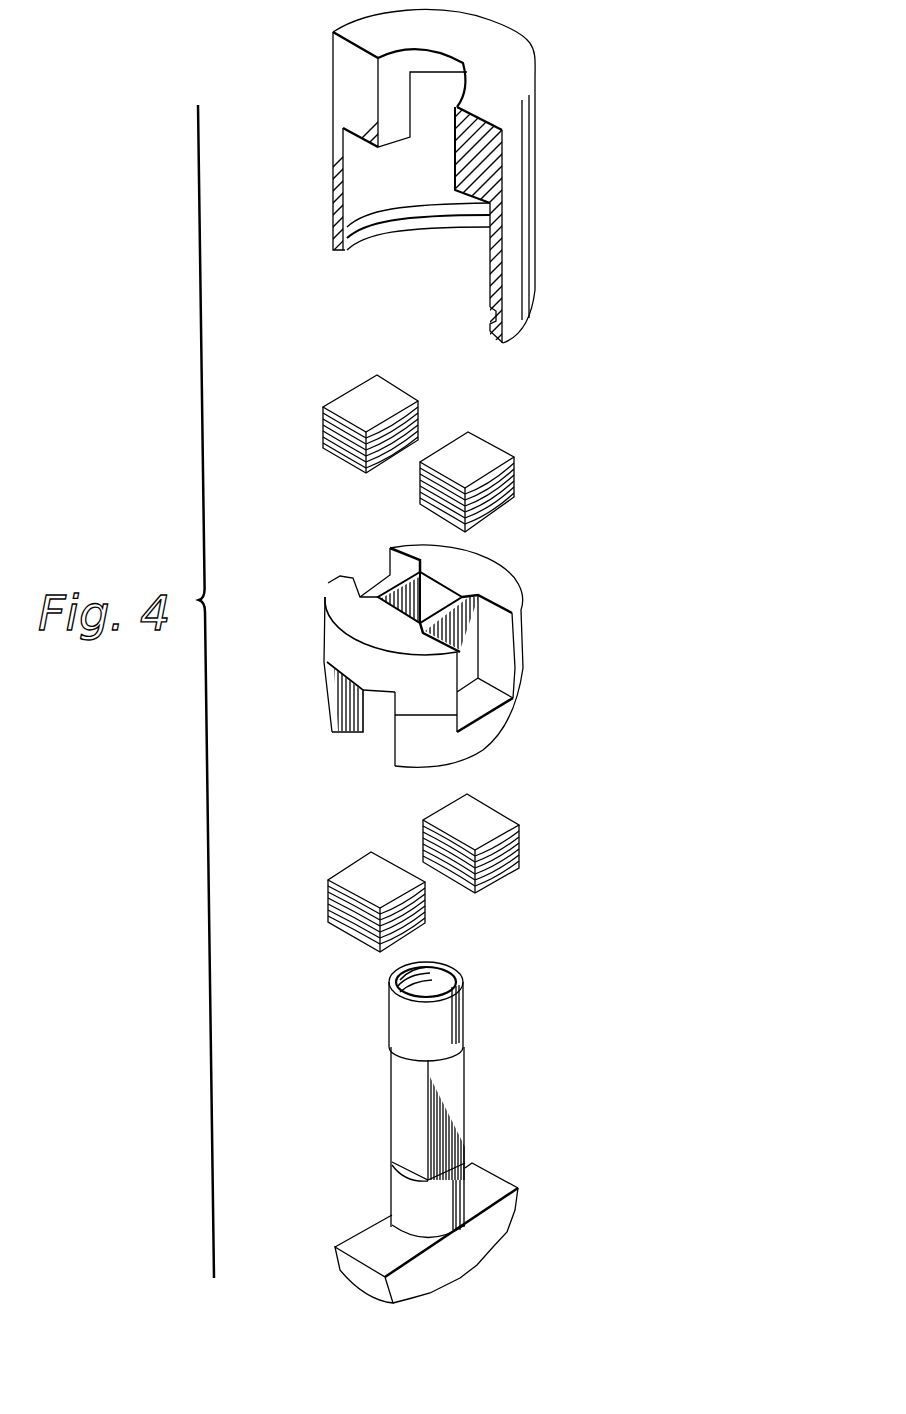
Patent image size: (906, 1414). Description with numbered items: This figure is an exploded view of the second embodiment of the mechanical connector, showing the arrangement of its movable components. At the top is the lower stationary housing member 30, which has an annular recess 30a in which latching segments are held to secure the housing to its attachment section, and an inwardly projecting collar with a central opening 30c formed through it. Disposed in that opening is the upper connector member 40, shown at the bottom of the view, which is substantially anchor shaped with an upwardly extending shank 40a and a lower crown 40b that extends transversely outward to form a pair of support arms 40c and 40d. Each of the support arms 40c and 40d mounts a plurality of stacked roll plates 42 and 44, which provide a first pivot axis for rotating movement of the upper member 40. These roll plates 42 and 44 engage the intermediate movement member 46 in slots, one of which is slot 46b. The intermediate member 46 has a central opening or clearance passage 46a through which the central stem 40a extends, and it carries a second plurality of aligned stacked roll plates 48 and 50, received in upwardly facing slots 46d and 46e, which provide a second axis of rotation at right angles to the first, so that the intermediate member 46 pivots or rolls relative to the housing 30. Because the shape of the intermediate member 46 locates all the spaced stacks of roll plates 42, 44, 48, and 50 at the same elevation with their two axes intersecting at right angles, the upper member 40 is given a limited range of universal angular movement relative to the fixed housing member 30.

The lower stationary housing member 30 is at (450, 426).
The annular recess 30a is at (492, 323).
The central opening 30c is at (454, 70).
The stacked roll plates 48 is at (353, 403).
The stacked roll plates 50 is at (483, 455).
The intermediate movement member 46 is at (437, 643).
The central opening or clearance passage 46a is at (407, 595).
The slot 46b is at (367, 695).
The upwardly facing slot 46d is at (346, 590).
The upwardly facing slot 46e is at (477, 703).
The stacked roll plates 44 is at (490, 823).
The stacked roll plates 42 is at (350, 873).
The upper connector member 40 is at (471, 1148).
The shank 40a is at (463, 1188).
The lower crown 40b is at (467, 1267).
The support arm 40c is at (410, 1297).
The support arm 40d is at (512, 1222).